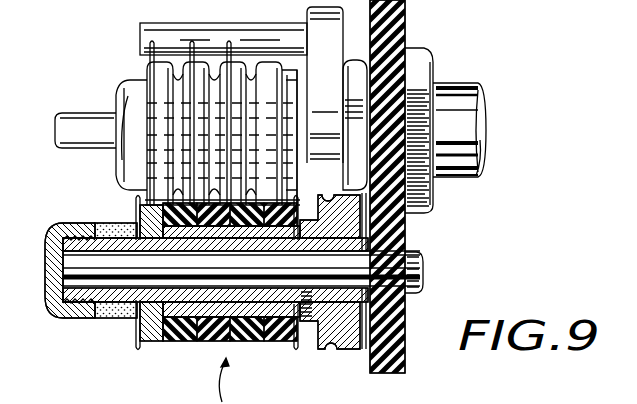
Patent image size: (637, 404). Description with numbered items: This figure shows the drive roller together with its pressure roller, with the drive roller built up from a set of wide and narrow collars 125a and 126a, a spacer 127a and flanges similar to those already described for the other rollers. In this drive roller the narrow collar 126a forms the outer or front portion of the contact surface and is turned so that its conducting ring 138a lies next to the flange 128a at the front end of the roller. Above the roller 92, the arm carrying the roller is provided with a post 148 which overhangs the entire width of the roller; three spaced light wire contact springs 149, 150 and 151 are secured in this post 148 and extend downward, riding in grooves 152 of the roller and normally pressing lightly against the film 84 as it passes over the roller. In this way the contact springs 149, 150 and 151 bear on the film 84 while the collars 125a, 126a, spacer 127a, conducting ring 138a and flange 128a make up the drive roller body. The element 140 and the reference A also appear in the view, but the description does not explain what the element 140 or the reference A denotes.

The post 148 is at (140, 39).
The contact spring 151 is at (156, 42).
The contact spring 150 is at (196, 44).
The contact spring 149 is at (233, 60).
The grooves 152 is at (240, 66).
The roller 92 is at (136, 86).
The spacer 127a is at (100, 226).
The film 84 is at (137, 210).
The flange 128a is at (135, 334).
The conducting ring 138a is at (155, 330).
The narrow collar 126a is at (178, 340).
The wide collar 125a is at (247, 340).
The tube 140 is at (229, 327).
The axis A is at (0, 403).